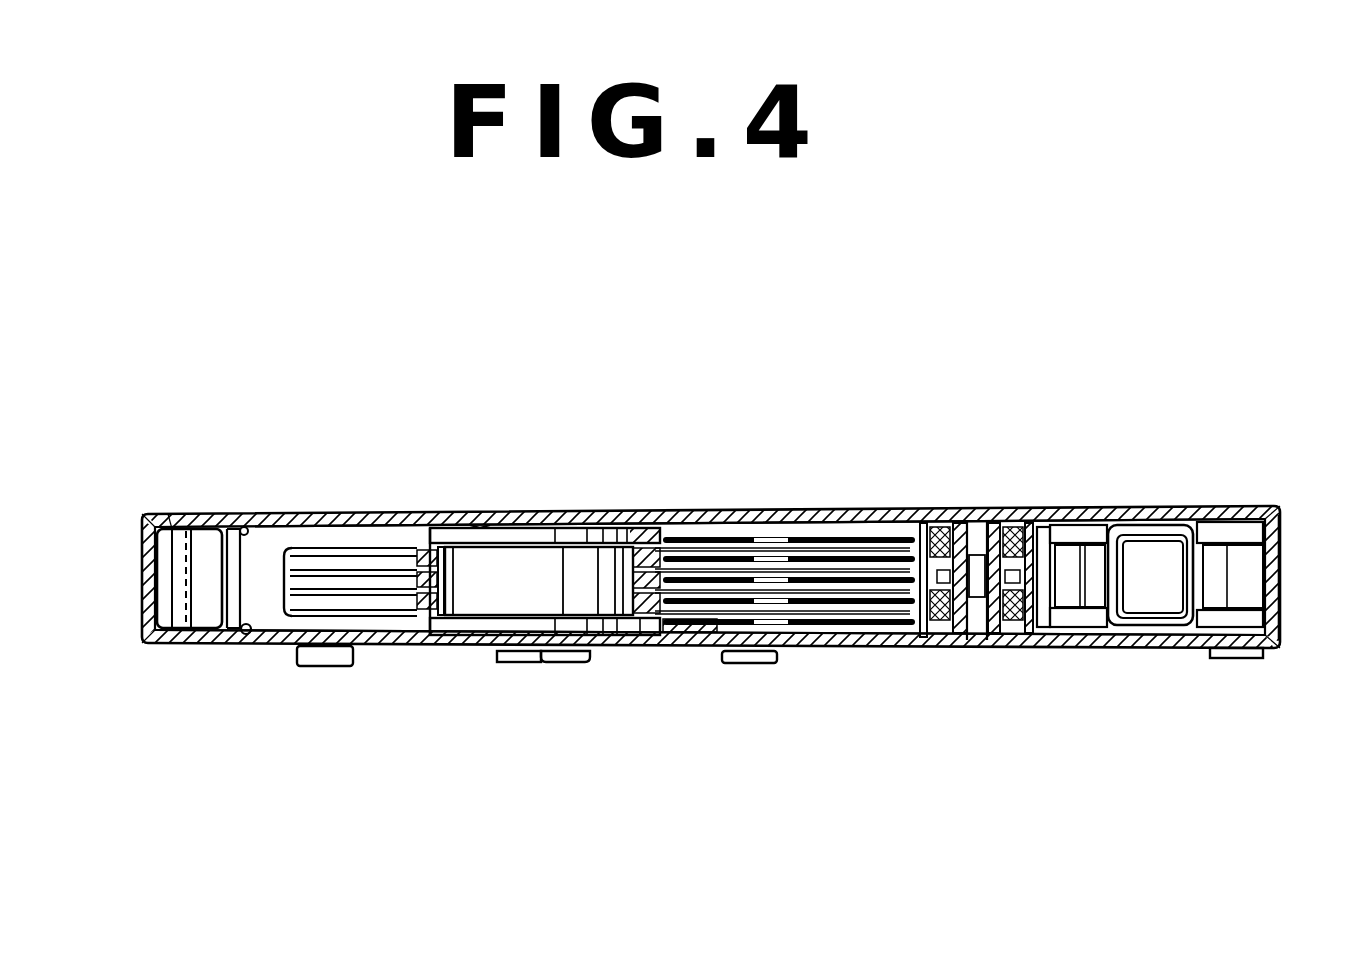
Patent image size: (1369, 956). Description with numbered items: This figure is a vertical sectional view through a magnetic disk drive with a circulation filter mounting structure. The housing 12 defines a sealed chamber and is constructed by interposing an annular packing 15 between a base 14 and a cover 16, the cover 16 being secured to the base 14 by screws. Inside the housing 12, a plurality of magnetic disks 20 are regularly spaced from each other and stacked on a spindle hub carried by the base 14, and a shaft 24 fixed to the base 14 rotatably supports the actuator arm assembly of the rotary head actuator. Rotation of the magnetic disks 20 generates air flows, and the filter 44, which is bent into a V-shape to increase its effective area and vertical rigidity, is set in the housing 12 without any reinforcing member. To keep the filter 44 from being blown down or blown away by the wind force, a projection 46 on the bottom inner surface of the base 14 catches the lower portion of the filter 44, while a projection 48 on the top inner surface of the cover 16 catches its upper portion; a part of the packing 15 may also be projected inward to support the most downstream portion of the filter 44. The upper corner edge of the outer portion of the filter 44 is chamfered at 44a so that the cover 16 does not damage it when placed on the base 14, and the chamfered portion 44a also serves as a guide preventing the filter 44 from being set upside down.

The housing 12 is at (1185, 500).
The base 14 is at (1088, 648).
The annular packing 15 is at (1282, 580).
The cover 16 is at (1110, 512).
The magnetic disks 20 is at (358, 590).
The shaft 24 is at (978, 512).
The filter 44 is at (208, 527).
The chamfered portion 44a is at (170, 514).
The projection 46 is at (248, 640).
The projection 48 is at (257, 514).